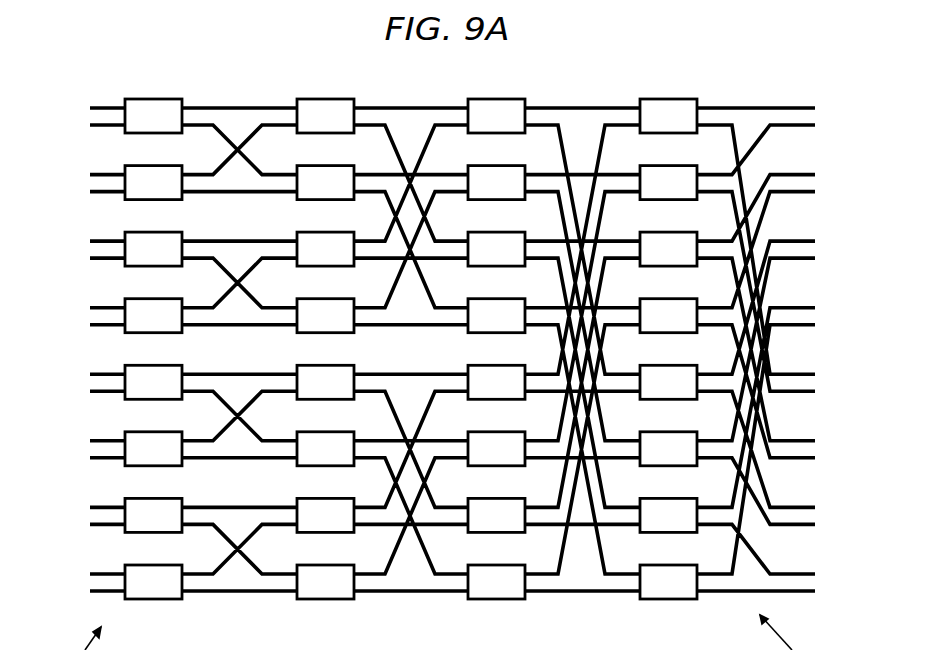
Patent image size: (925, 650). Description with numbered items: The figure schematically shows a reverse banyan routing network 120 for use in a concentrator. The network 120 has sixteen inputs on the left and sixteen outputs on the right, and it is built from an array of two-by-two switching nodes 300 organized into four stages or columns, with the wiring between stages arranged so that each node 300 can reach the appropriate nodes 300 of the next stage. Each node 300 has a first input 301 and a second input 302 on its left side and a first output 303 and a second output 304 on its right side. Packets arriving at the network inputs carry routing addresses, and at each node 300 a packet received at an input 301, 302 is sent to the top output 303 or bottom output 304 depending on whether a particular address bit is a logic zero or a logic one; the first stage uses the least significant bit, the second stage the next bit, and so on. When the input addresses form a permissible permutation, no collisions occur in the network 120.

The reverse banyan routing network 120 is at (72, 238).
The 2x2 switching node 300 is at (151, 99).
The first input 301 is at (91, 127).
The second input 302 is at (92, 106).
The first output 303 is at (204, 107).
The second output 304 is at (200, 127).